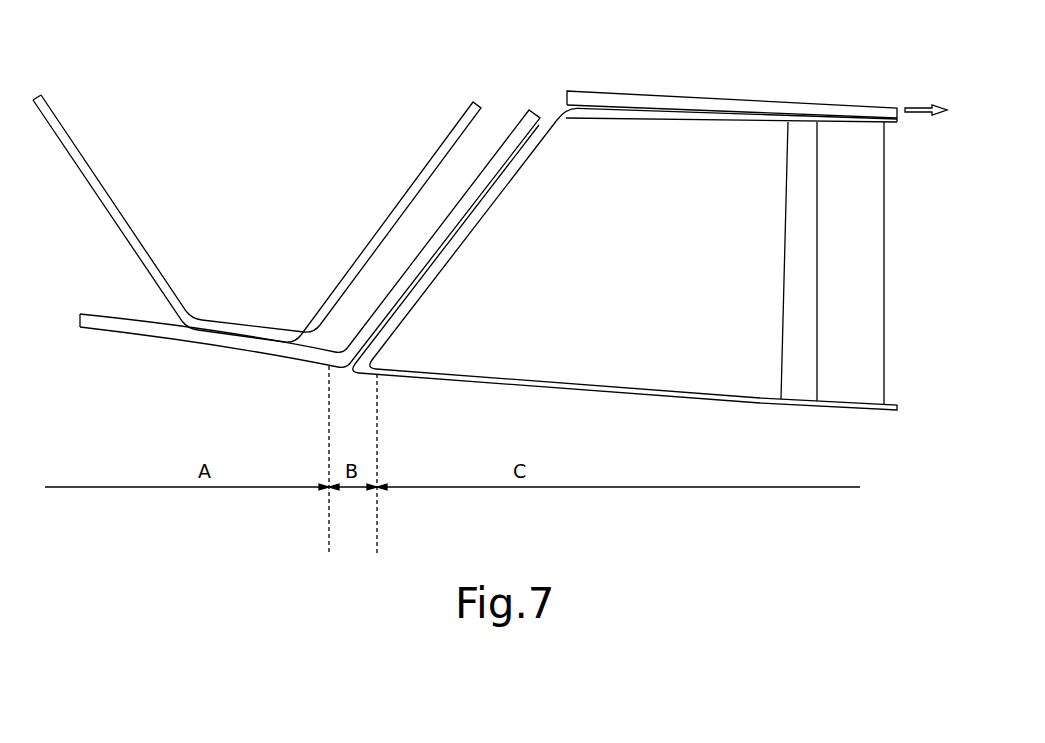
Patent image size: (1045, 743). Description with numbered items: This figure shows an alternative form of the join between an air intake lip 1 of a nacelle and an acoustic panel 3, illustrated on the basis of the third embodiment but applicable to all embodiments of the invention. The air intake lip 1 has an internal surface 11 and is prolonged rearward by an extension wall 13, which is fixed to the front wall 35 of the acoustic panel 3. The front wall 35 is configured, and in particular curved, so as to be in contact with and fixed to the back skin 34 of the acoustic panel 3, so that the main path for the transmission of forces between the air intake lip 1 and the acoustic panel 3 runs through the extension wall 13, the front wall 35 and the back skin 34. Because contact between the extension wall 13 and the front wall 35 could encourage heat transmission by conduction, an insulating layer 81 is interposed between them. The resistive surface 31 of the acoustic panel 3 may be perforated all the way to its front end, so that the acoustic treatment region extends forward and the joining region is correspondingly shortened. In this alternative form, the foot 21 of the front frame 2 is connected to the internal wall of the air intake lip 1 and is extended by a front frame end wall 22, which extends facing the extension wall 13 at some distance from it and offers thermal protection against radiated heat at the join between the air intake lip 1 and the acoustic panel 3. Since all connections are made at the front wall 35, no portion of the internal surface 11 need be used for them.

The air intake lip 1 is at (157, 335).
The internal surface 11 is at (228, 352).
The extension wall 13 is at (525, 125).
The front frame 2 is at (88, 173).
The foot 21 is at (218, 328).
The front frame end wall 22 is at (433, 163).
The acoustic panel 3 is at (847, 155).
The resistive surface 31 is at (800, 405).
The back skin 34 is at (615, 100).
The front wall 35 is at (483, 209).
The insulating layer 81 is at (430, 267).